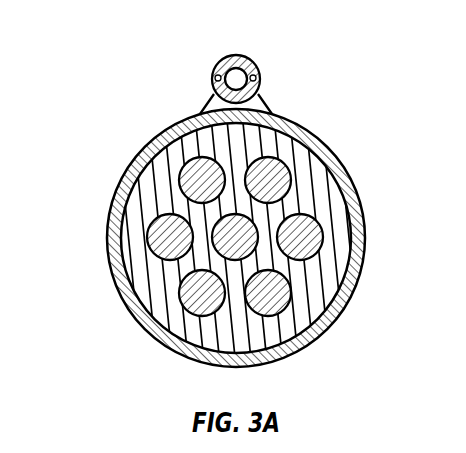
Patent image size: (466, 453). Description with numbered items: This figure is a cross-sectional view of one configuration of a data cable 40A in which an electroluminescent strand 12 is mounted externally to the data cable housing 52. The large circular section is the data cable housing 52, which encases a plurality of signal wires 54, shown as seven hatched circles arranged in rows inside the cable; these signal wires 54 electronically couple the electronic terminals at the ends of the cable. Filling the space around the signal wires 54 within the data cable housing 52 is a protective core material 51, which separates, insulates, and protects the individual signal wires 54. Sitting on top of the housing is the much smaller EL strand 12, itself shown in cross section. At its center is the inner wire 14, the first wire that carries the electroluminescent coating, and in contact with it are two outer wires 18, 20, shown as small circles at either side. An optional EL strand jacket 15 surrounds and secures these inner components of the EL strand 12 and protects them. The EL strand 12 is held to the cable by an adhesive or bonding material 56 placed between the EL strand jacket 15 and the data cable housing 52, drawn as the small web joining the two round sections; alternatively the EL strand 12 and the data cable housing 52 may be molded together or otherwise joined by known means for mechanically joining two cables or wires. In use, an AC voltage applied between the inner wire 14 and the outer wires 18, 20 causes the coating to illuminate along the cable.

The electroluminescent strand 12 is at (257, 45).
The inner wire 14 is at (235, 78).
The EL strand jacket 15 is at (213, 88).
The outer wire 18 is at (215, 77).
The outer wire 20 is at (256, 78).
The data cable 40A is at (127, 128).
The protective core material 51 is at (283, 150).
The data cable housing 52 is at (340, 158).
The signal wires 54 is at (322, 226).
The adhesive or bonding material 56 is at (258, 105).